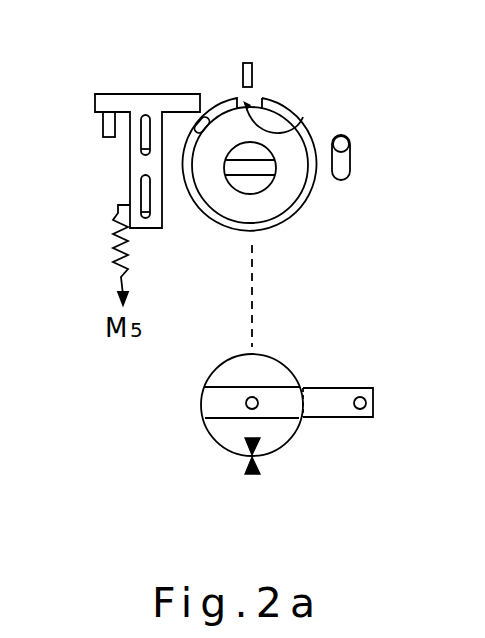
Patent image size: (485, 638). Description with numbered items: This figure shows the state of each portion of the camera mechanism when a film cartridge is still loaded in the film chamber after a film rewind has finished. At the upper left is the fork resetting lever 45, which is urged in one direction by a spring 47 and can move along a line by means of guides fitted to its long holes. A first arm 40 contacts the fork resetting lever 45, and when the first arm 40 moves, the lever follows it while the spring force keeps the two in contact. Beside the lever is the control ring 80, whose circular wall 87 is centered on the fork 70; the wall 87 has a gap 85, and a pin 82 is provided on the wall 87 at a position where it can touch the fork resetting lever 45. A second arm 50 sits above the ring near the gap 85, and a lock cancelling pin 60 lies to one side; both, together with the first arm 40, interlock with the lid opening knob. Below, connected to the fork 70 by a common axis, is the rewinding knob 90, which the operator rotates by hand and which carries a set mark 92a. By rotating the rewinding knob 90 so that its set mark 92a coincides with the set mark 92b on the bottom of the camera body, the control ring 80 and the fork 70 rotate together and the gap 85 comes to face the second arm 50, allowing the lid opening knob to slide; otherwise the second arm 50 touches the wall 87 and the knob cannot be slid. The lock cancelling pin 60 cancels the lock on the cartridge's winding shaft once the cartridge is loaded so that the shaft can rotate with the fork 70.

The first arm 40 is at (106, 129).
The fork resetting lever 45 is at (118, 103).
The spring 47 is at (118, 259).
The second arm 50 is at (253, 74).
The lock cancelling pin 60 is at (348, 172).
The fork 70 is at (247, 184).
The control ring 80 is at (314, 189).
The pin 82 is at (208, 122).
The gap 85 is at (308, 126).
The circular wall 87 is at (278, 108).
The rewinding knob 90 is at (288, 362).
The set mark 92a is at (258, 446).
The set mark 92b is at (258, 470).